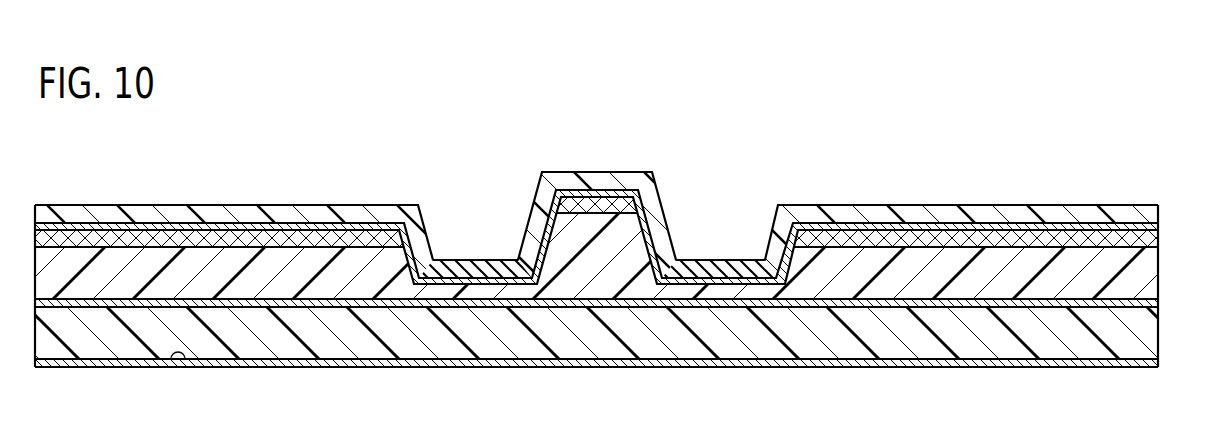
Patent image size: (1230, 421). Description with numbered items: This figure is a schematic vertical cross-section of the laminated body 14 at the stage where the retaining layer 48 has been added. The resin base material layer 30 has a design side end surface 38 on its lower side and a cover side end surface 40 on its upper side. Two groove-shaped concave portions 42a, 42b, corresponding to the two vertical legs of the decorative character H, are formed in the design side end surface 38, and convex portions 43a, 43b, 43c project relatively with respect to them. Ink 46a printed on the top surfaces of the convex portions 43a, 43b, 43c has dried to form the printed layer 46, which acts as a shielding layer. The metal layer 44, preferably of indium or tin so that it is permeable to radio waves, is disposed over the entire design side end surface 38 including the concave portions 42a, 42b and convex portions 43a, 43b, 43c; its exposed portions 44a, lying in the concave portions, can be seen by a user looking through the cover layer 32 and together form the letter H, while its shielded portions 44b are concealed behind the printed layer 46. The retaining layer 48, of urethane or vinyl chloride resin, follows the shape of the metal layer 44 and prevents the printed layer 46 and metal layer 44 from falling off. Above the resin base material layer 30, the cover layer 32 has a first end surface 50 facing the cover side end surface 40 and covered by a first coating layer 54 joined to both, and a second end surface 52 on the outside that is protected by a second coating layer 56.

The laminated body 14 is at (1131, 102).
The resin base material layer 30 is at (1150, 277).
The cover layer 32 is at (1150, 340).
The design side end surface 38 is at (278, 245).
The cover side end surface 40 is at (247, 300).
The concave portion 42a is at (720, 272).
The concave portion 42b is at (475, 272).
The convex portion 43a is at (915, 245).
The convex portion 43b is at (583, 210).
The convex portion 43c is at (122, 245).
The metal layer 44 is at (995, 228).
The exposed portions 44a is at (440, 283).
The shielded portions 44b is at (613, 190).
The printed layer 46 is at (596, 202).
The ink 46a is at (976, 238).
The retaining layer 48 is at (566, 176).
The first end surface 50 is at (102, 307).
The second end surface 52 is at (187, 358).
The first coating layer 54 is at (1082, 305).
The second coating layer 56 is at (1127, 366).